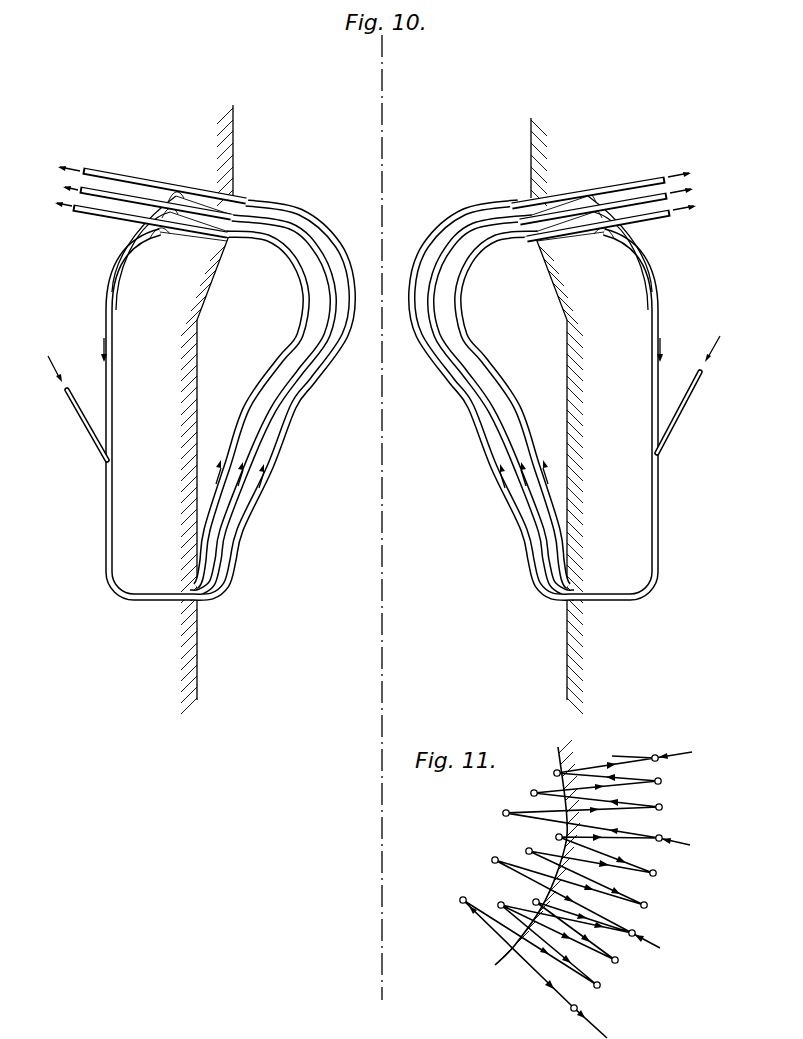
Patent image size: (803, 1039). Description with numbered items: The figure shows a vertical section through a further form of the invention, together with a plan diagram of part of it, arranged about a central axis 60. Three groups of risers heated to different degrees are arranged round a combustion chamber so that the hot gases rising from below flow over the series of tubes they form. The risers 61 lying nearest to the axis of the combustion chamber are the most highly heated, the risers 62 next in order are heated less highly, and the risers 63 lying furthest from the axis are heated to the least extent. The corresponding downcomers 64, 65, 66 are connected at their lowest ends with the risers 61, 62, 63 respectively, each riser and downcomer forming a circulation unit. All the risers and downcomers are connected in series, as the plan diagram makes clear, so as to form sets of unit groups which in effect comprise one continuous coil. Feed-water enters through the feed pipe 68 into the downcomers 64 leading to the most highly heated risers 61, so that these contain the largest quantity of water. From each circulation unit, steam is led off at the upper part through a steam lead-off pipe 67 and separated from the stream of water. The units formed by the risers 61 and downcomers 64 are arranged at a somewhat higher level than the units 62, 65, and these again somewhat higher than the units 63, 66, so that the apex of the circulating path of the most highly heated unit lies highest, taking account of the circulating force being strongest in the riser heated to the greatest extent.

In FIG. 10, the axis of symmetry 60 is at (370, 517).
In FIG. 10, the risers 61 is at (279, 468).
In FIG. 11, the risers 61 is at (504, 810).
In FIG. 10, the risers 62 is at (273, 415).
In FIG. 11, the risers 62 is at (532, 790).
In FIG. 10, the risers 63 is at (248, 412).
In FIG. 11, the risers 63 is at (555, 770).
In FIG. 11, the downcomers 64 is at (663, 835).
In FIG. 11, the downcomers 65 is at (664, 804).
In FIG. 11, the downcomers 66 is at (662, 779).
In FIG. 10, the steam lead-off pipe 67 is at (114, 208).
In FIG. 10, the feed pipe 68 is at (90, 432).
In FIG. 11, the feed pipe 68 is at (688, 846).